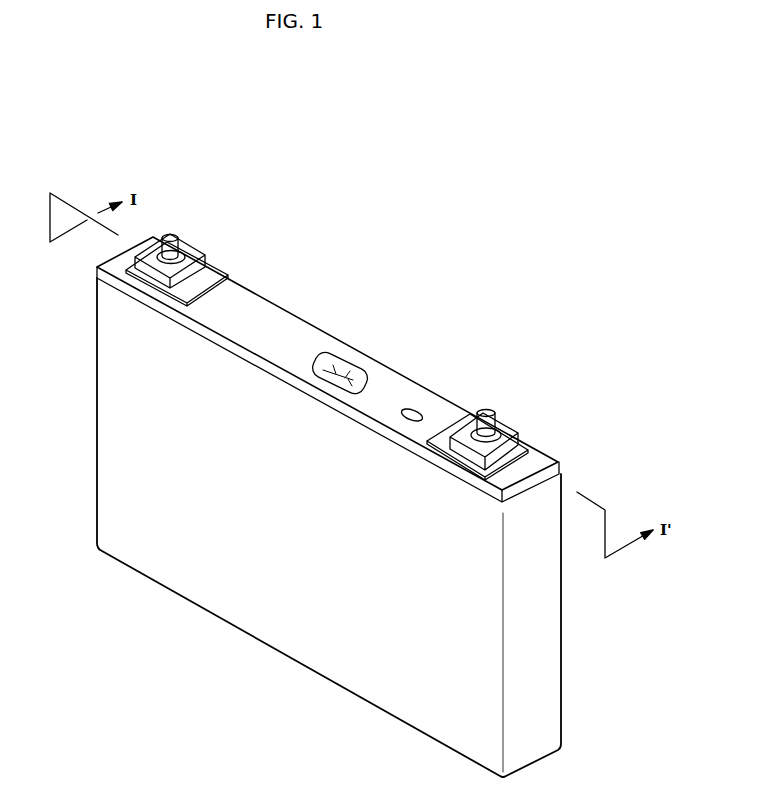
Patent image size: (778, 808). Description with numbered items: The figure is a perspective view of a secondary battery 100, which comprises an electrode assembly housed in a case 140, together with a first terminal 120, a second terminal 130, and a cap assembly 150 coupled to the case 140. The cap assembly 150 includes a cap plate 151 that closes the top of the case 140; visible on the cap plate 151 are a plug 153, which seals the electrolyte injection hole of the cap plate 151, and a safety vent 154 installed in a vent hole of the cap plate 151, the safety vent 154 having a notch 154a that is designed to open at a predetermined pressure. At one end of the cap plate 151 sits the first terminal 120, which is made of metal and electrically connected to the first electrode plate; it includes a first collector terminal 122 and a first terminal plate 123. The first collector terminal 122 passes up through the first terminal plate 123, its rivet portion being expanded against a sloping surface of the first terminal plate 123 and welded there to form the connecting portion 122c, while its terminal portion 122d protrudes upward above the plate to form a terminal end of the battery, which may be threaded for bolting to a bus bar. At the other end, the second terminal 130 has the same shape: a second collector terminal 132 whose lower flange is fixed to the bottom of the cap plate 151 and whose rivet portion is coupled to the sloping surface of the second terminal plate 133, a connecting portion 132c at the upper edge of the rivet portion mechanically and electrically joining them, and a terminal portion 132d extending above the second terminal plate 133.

The secondary battery 100 is at (576, 245).
The first terminal 120 is at (150, 230).
The first collector terminal 122 is at (114, 240).
The connecting portion 122c is at (145, 266).
The terminal portion 122d is at (160, 243).
The first terminal plate 123 is at (198, 243).
The second terminal 130 is at (521, 402).
The second collector terminal 132 is at (526, 383).
The connecting portion 132c is at (499, 430).
The terminal portion 132d is at (487, 411).
The second terminal plate 133 is at (522, 428).
The case 140 is at (283, 638).
The cap assembly 150 is at (314, 325).
The cap plate 151 is at (262, 308).
The plug 153 is at (412, 412).
The safety vent 154 is at (340, 364).
The notch 154a is at (347, 378).